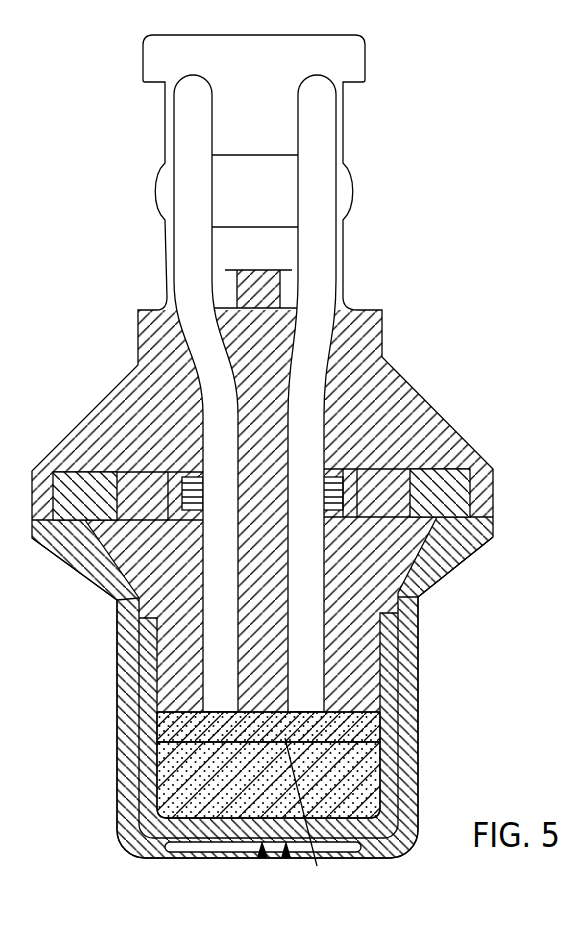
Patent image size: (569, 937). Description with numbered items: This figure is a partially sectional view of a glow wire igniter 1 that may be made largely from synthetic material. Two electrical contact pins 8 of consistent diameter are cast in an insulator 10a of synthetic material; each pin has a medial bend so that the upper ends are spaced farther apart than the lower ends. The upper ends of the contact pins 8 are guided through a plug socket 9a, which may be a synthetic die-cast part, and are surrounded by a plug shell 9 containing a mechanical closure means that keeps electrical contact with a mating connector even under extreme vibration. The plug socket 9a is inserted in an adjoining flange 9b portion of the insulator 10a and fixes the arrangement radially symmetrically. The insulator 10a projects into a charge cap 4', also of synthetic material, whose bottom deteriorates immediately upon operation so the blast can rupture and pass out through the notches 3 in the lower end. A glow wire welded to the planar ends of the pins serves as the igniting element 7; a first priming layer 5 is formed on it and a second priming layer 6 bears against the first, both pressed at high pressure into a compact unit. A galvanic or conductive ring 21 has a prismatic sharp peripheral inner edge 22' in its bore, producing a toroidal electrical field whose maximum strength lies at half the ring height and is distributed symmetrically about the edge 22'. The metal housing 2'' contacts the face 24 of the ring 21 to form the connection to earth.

The glow wire igniter 1 is at (408, 302).
The housing 2'' is at (300, 686).
The notches 3 is at (245, 862).
The charge cap 4' is at (262, 687).
The first priming layer 5 is at (383, 727).
The second priming layer 6 is at (382, 778).
The igniting element 7 is at (306, 818).
The contact pins 8 is at (185, 114).
The plug shell 9 is at (355, 57).
The plug socket 9a is at (155, 332).
The flange 9b is at (400, 548).
The insulator 10a is at (178, 677).
The conductive ring 21 is at (482, 477).
The prismatic sharp peripheral inner edge 22' is at (262, 481).
The contact face 24 is at (80, 528).